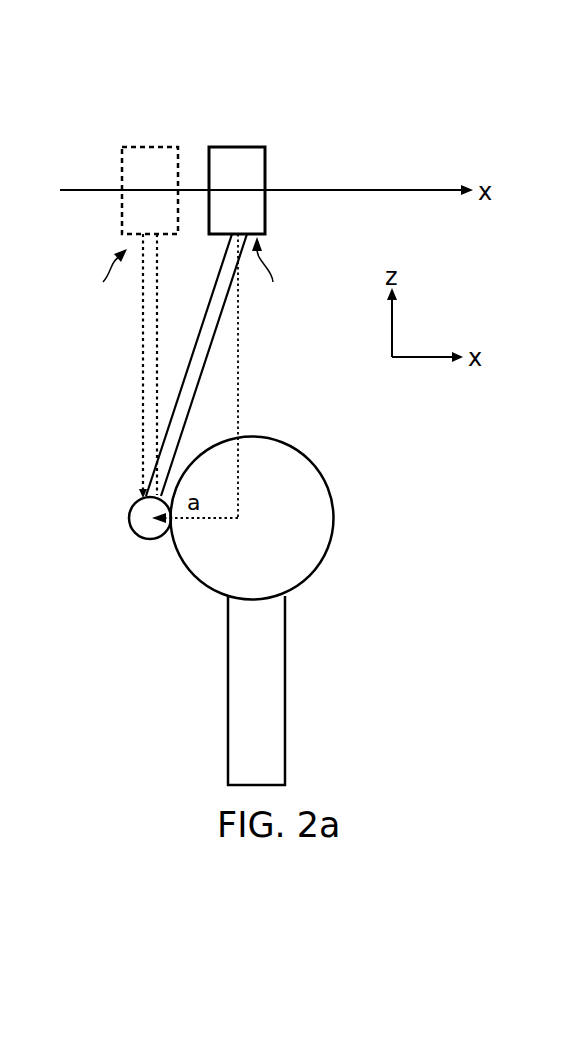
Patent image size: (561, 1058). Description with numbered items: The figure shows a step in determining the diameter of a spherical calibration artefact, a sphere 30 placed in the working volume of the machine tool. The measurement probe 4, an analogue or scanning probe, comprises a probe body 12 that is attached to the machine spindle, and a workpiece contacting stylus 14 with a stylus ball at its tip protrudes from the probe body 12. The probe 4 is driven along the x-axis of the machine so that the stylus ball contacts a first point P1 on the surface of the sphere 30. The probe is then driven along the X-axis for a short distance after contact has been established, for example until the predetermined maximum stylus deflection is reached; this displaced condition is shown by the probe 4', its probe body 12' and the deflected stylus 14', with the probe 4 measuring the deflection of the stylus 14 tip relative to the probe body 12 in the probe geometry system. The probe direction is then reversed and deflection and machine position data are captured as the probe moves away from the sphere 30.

The probe body 12 is at (238, 165).
The probe body 12' is at (155, 165).
The measurement probe 4 is at (270, 275).
The measurement probe 4' is at (102, 280).
The workpiece contacting stylus 14 is at (225, 365).
The workpiece contacting stylus 14' is at (114, 366).
The first point P1 is at (173, 521).
The sphere 30 is at (268, 569).